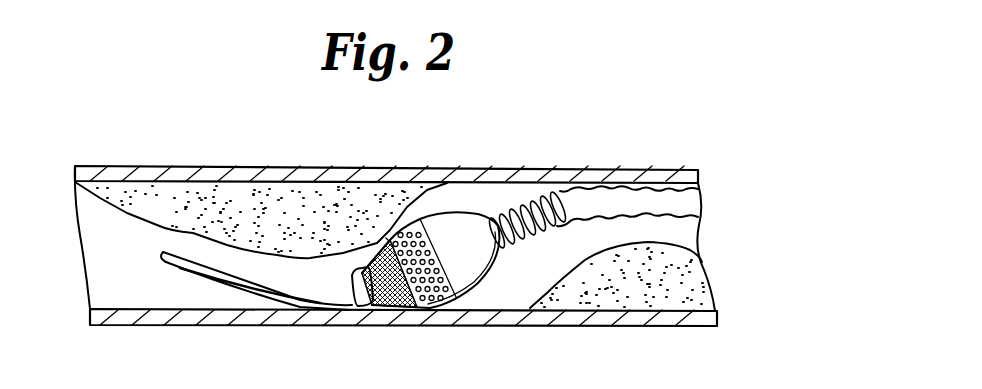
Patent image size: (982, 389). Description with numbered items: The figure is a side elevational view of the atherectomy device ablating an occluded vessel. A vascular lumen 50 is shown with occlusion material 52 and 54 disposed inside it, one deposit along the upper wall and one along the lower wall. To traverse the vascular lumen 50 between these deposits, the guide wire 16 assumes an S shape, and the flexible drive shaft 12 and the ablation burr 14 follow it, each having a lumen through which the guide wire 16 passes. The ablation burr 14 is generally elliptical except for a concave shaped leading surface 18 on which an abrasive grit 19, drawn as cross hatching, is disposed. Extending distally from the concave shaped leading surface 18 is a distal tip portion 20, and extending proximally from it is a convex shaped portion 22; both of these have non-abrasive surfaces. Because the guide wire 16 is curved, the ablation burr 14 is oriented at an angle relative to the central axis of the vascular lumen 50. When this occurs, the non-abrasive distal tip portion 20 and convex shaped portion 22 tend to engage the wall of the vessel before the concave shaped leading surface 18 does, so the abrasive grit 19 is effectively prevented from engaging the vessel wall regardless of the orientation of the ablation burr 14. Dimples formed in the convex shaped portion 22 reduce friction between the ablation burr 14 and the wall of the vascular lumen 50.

The flexible drive shaft 12 is at (600, 207).
The ablation burr 14 is at (493, 280).
The guide wire 16 is at (215, 283).
The concave shaped leading surface 18 is at (402, 308).
The abrasive grit 19 is at (388, 240).
The distal tip portion 20 is at (352, 300).
The convex shaped portion 22 is at (445, 287).
The vascular lumen 50 is at (470, 177).
The occlusion material 52 is at (273, 203).
The occlusion material 54 is at (617, 285).